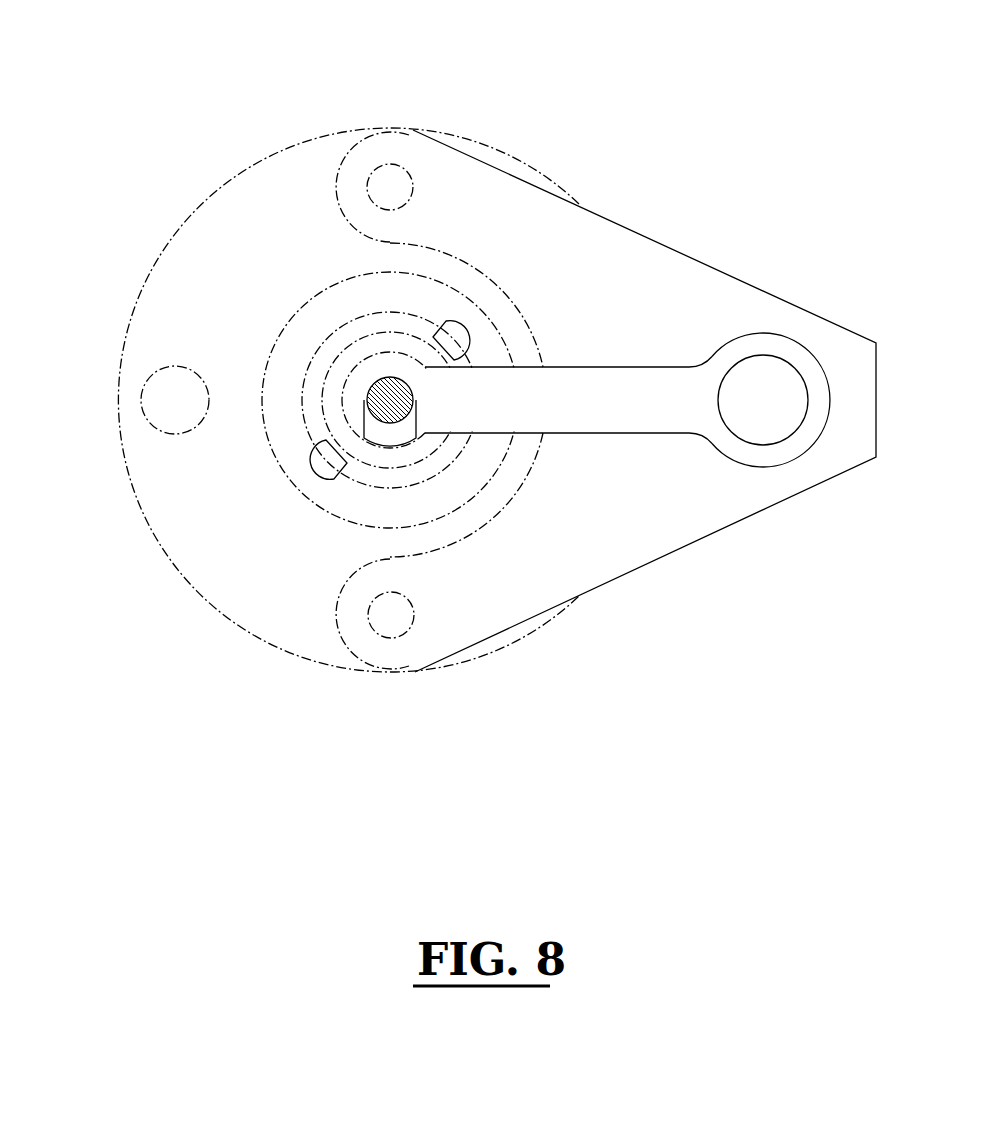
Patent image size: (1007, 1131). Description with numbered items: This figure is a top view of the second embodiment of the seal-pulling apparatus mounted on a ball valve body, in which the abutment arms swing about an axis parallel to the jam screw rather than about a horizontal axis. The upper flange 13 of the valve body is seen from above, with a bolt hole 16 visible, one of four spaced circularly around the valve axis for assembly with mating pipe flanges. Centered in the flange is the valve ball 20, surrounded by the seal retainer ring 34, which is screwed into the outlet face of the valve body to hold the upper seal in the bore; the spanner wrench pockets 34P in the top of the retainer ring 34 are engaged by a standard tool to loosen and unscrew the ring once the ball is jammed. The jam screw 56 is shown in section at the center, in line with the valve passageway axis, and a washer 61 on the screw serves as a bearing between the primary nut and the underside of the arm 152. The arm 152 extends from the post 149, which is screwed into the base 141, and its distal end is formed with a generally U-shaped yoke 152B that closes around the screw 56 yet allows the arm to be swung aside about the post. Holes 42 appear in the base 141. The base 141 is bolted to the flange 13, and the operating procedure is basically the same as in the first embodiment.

The upper flange 13 is at (205, 502).
The bolt hole 16 is at (168, 407).
The valve ball 20 is at (333, 397).
The seal retainer ring 34 is at (290, 342).
The spanner wrench pockets 34P is at (452, 338).
The mounting holes 42 is at (390, 187).
The jam screw 56 is at (405, 393).
The washer 61 is at (388, 432).
The base 141 is at (735, 490).
The post 149 is at (763, 400).
The arm 152 is at (617, 402).
The yoke 152B is at (378, 378).